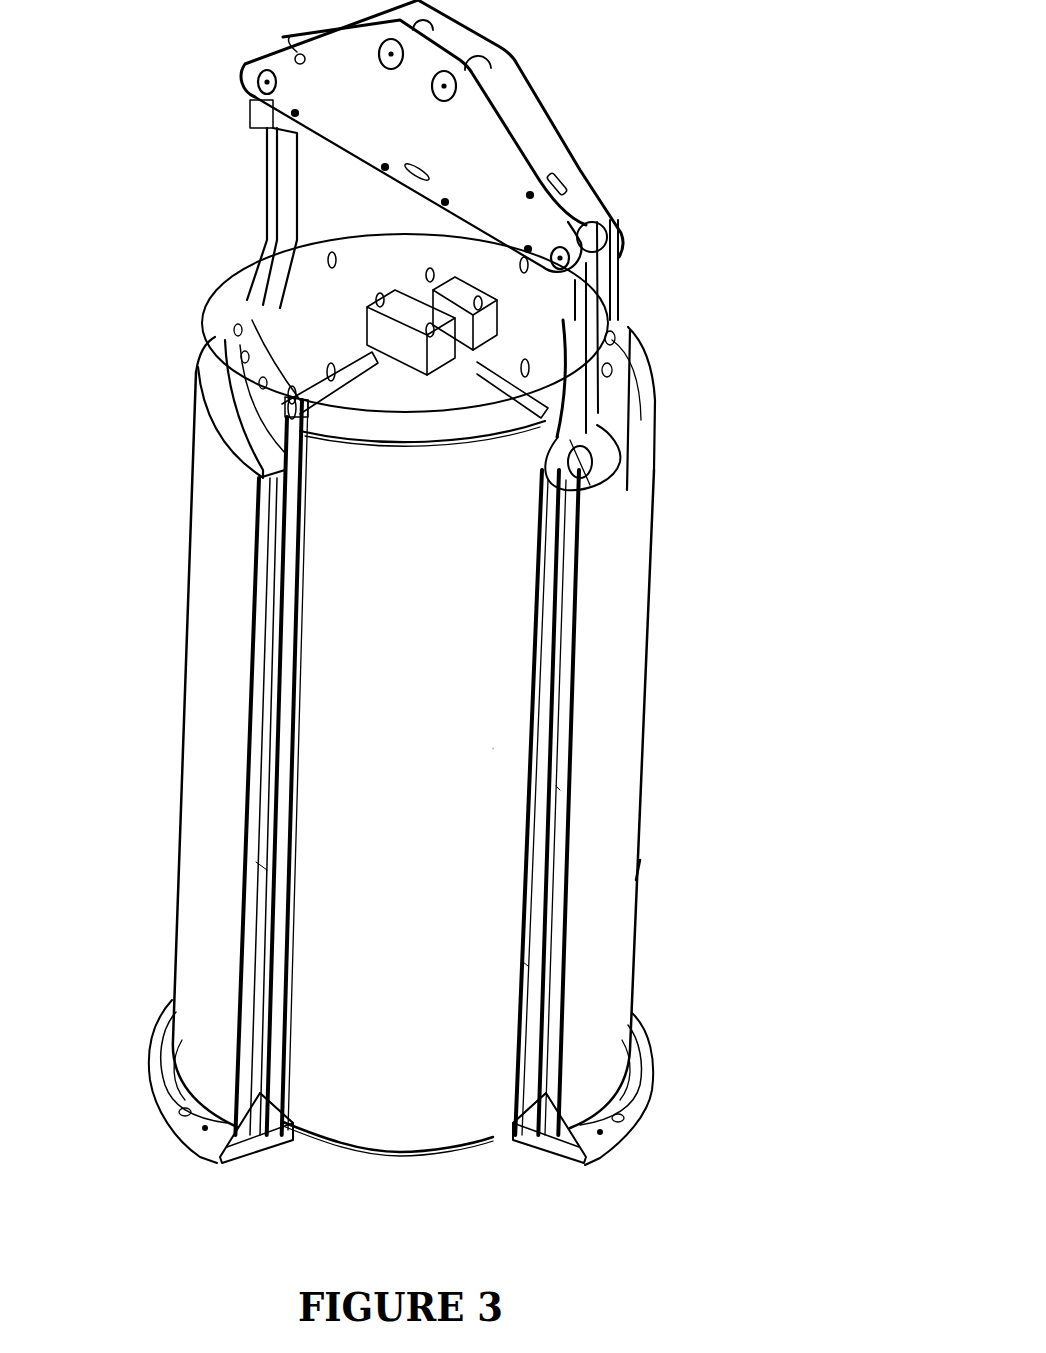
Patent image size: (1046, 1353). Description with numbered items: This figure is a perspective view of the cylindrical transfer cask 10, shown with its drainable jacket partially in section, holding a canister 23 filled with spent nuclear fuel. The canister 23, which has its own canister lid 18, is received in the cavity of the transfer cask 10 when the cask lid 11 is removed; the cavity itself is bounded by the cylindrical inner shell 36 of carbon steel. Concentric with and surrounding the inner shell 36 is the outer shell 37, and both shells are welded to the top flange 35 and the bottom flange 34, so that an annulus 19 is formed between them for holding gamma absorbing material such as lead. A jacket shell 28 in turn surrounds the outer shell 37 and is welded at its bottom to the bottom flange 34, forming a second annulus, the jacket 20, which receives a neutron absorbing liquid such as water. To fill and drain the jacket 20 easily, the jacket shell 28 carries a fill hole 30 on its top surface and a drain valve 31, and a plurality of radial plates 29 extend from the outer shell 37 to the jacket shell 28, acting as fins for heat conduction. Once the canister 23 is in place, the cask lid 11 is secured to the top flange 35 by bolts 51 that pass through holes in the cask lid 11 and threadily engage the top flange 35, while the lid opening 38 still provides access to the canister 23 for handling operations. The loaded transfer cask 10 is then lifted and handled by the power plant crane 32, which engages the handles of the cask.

The transfer cask 10 is at (782, 263).
The cask lid 11 is at (287, 330).
The canister lid 18 is at (462, 392).
The annulus 19 is at (543, 637).
The jacket 20 is at (558, 787).
The canister 23 is at (493, 748).
The jacket shell 28 is at (615, 868).
The radial plates 29 is at (253, 723).
The fill hole 30 is at (236, 447).
The drain valve 31 is at (148, 1053).
The power plant crane 32 is at (584, 188).
The bottom flange 34 is at (653, 1067).
The top flange 35 is at (600, 408).
The inner shell 36 is at (525, 963).
The outer shell 37 is at (263, 860).
The lid opening 38 is at (492, 337).
The bolts 51 is at (610, 328).